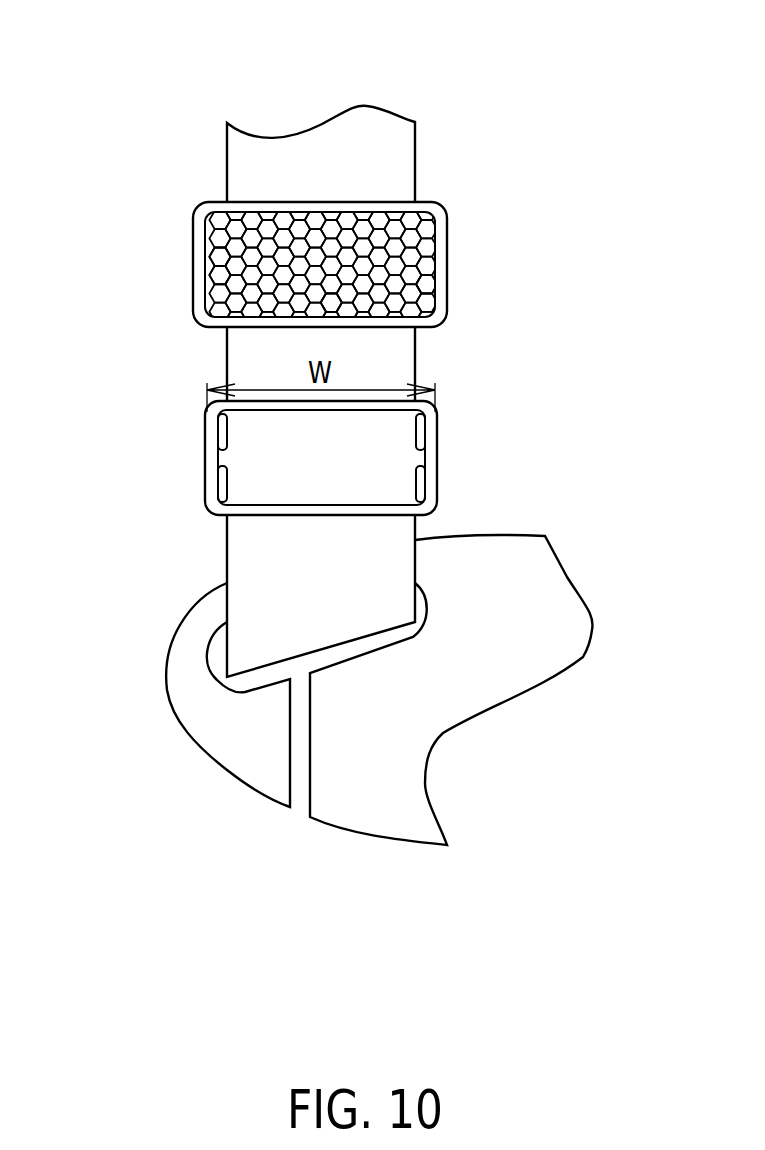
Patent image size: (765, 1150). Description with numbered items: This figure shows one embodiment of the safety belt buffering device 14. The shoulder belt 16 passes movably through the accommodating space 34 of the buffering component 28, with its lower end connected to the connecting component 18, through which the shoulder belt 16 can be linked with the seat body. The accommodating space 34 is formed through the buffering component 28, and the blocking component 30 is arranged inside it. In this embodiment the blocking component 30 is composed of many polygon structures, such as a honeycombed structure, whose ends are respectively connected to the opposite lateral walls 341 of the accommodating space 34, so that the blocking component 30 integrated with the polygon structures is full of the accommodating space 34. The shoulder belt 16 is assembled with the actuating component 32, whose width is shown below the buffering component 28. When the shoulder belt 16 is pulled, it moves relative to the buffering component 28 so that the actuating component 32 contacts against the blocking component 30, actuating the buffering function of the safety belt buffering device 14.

The safety belt buffering device 14 is at (565, 112).
The shoulder belt 16 is at (282, 550).
The connecting component 18 is at (253, 745).
The buffering component 28 is at (245, 324).
The blocking component 30 is at (321, 293).
The actuating component 32 is at (210, 458).
The accommodating space 34 is at (341, 306).
The lateral wall 341 is at (204, 280).